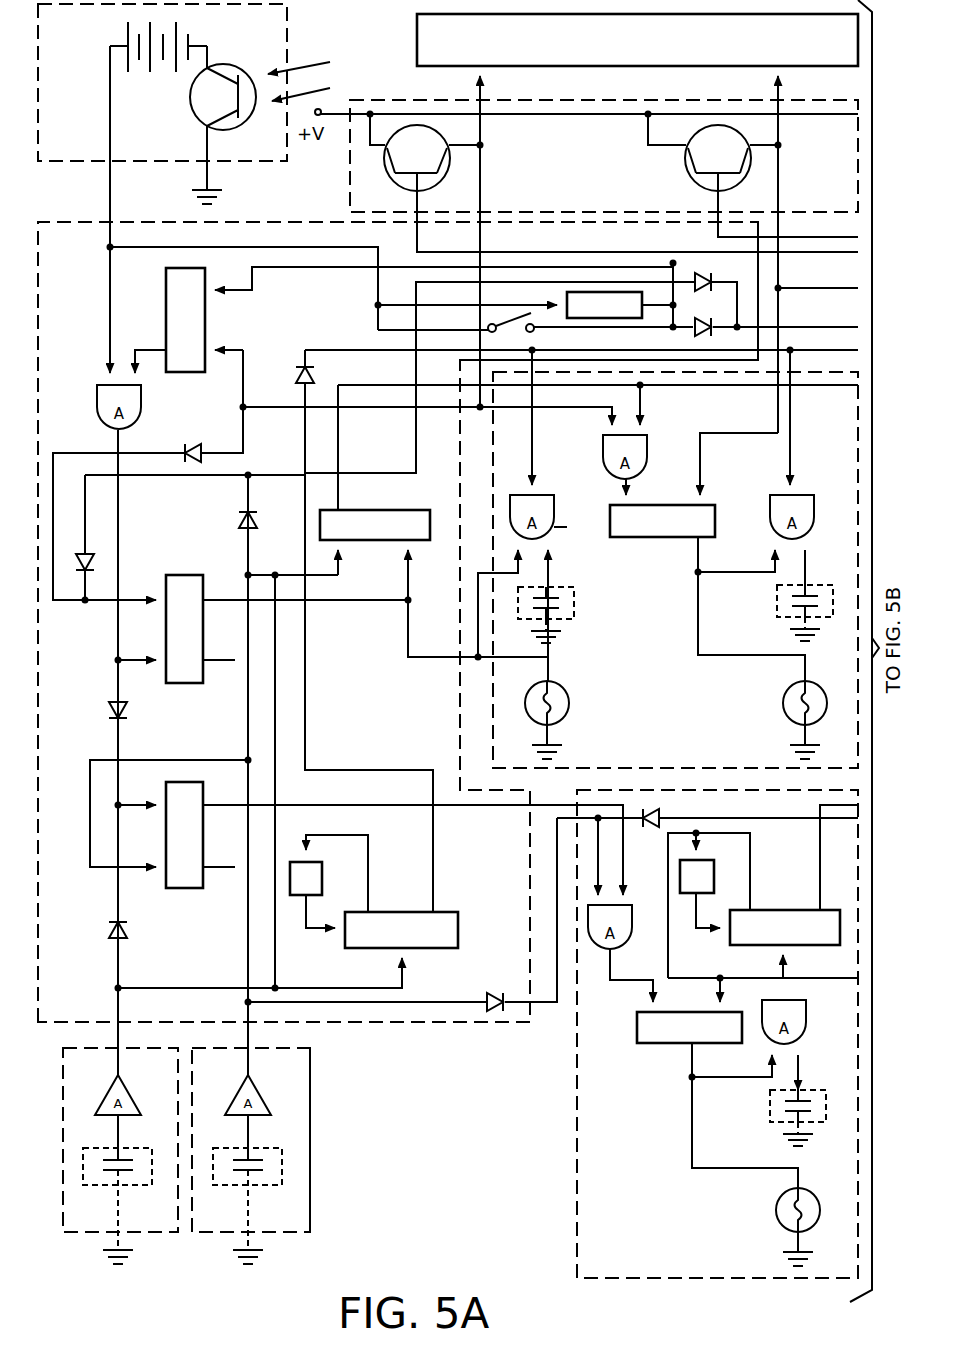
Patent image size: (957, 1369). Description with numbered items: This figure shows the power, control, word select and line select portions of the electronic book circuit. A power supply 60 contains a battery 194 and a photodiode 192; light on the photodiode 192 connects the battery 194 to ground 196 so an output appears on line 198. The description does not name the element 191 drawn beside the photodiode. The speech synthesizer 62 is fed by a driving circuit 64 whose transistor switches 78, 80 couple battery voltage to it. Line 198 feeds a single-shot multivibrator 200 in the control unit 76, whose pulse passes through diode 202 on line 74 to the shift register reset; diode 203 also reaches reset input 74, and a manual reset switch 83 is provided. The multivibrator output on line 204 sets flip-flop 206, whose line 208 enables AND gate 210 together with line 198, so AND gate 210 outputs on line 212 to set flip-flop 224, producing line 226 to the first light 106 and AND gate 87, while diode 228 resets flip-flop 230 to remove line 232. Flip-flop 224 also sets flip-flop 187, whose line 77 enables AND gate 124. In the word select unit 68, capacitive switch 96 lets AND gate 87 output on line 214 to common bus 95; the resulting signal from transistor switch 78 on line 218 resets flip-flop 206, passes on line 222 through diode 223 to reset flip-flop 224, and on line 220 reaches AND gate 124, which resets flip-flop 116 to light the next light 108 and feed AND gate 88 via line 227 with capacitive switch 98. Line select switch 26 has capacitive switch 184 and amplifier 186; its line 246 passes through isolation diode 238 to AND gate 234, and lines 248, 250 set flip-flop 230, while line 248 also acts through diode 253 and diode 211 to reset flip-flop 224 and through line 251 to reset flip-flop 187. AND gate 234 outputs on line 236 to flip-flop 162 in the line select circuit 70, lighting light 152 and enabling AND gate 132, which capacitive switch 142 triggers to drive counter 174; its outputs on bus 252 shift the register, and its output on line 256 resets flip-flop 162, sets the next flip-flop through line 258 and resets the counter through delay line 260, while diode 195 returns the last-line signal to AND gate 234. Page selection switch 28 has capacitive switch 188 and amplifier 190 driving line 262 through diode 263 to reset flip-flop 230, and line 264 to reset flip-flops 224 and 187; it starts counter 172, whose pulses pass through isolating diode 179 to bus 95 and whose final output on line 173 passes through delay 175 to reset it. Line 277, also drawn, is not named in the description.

The power supply 60 is at (287, 40).
The battery 194 is at (185, 36).
The transistor connections 191 is at (330, 62).
The photodiode 192 is at (194, 118).
The ground 196 is at (222, 192).
The line 198 is at (110, 189).
The speech synthesizer 62 is at (647, 54).
The speech synthesizer driving circuit 64 is at (408, 100).
The transistor switch 78 is at (420, 188).
The transistor switch 80 is at (696, 180).
The line 218 is at (482, 175).
The control unit 76 is at (290, 212).
The manual reset switch 83 is at (512, 322).
The single-shot multivibrator 200 is at (585, 292).
The diode 203 is at (703, 272).
The diode 202 is at (715, 332).
The line 204 is at (318, 268).
The flip-flop 206 is at (205, 318).
The line 208 is at (135, 345).
The AND gate 210 is at (142, 405).
The common bus 95 is at (348, 350).
The isolating diode 179 is at (297, 378).
The diode 223 is at (176, 448).
The line 222 is at (243, 435).
The reset input 74 is at (830, 362).
The line 220 is at (608, 408).
The AND gate 124 is at (648, 452).
The line 214 is at (534, 460).
The AND gate 87 is at (585, 515).
The AND gate 88 is at (809, 505).
The capacitive switch 98 is at (833, 587).
The line 77 is at (340, 448).
The line 212 is at (120, 522).
The diode 253 is at (239, 522).
The line 251 is at (268, 575).
The flip-flop 224 is at (192, 575).
The flip-flop 187 is at (380, 542).
The flip-flop 116 is at (665, 537).
The line 227 is at (763, 574).
The capacitive switch 96 is at (573, 604).
The line 226 is at (321, 600).
The diode 211 is at (98, 560).
The line 277 is at (335, 660).
The word select unit 68 is at (460, 702).
The light-emitting diode 106 is at (570, 706).
The light-emitting diode 108 is at (783, 705).
The diode 228 is at (110, 712).
The line 264 is at (276, 728).
The line 250 is at (197, 760).
The diode 195 is at (645, 815).
The delay line 260 is at (716, 875).
The common bus 252 is at (838, 805).
The line 256 is at (752, 875).
The line 232 is at (294, 805).
The line 173 is at (352, 836).
The delay 175 is at (322, 878).
The counter 172 is at (458, 920).
The counter 174 is at (808, 910).
The isolation diode 238 is at (493, 992).
The line 246 is at (418, 1000).
The line 258 is at (852, 977).
The AND gate 234 is at (632, 928).
The line 236 is at (650, 997).
The flip-flop 162 is at (678, 1043).
The AND gate 132 is at (808, 1022).
The capacitive switch 142 is at (767, 1113).
The light-emitting diode 152 is at (776, 1205).
The diode 263 is at (109, 918).
The flip-flop 230 is at (188, 888).
The line 248 is at (248, 960).
The line 262 is at (118, 1010).
The amplifier 190 is at (107, 1095).
The amplifier 186 is at (237, 1095).
The line select switch 26 is at (308, 1078).
The line select circuit 70 is at (577, 1128).
The capacitive switch 188 is at (128, 1186).
The capacitive switch 184 is at (258, 1188).
The page selection switch 28 is at (137, 1243).